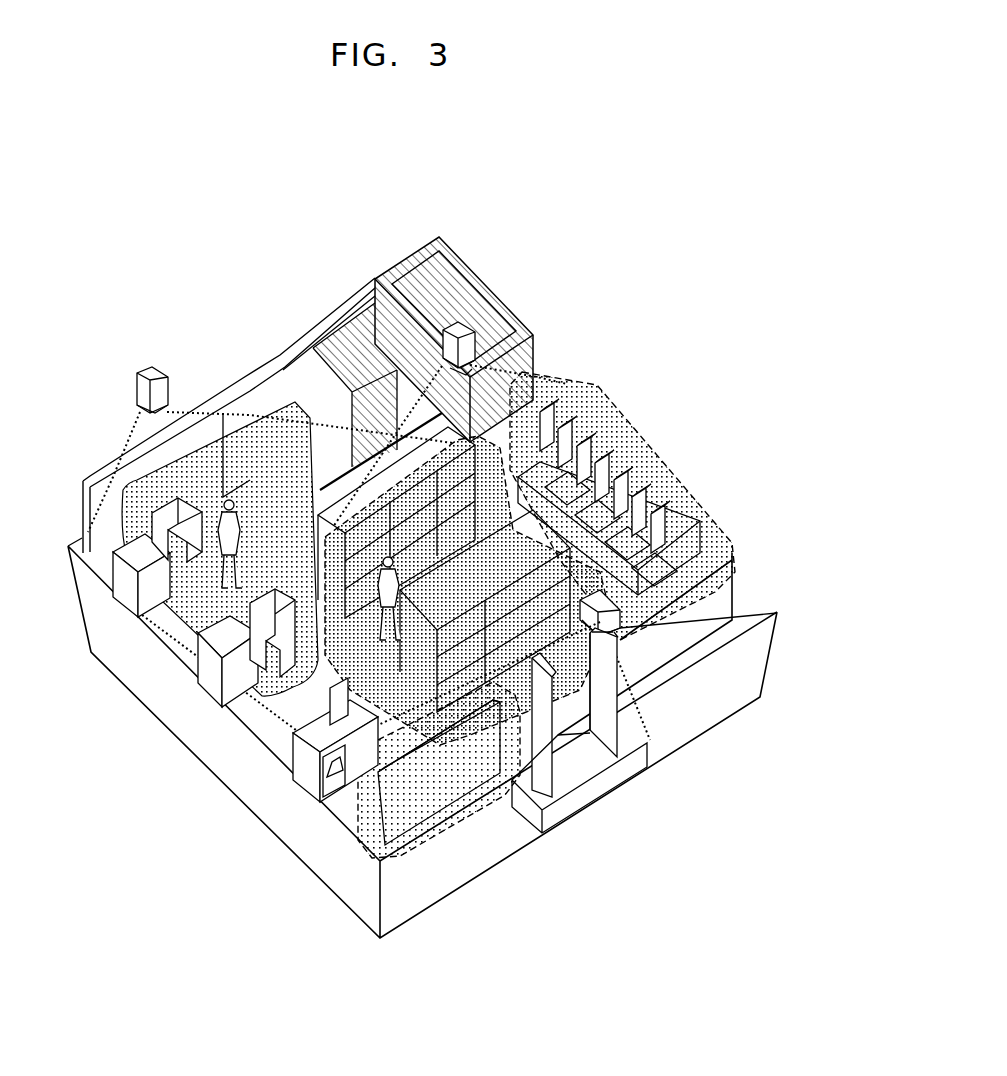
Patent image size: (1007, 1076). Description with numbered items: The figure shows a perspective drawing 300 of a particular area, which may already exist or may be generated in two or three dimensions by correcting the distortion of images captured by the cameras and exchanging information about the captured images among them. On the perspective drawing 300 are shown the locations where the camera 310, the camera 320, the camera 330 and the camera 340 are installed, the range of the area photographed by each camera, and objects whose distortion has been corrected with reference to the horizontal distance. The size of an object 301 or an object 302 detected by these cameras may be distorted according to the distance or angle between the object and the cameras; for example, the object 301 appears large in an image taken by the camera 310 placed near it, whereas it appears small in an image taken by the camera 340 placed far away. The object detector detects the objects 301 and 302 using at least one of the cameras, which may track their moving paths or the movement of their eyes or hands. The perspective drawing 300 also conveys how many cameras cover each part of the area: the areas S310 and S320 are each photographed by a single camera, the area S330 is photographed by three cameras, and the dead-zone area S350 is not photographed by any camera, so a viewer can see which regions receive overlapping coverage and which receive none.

The perspective drawing 300 is at (697, 250).
The object 301 is at (262, 698).
The object 302 is at (205, 606).
The camera 310 is at (472, 331).
The camera 320 is at (620, 623).
The camera 330 is at (320, 787).
The camera 340 is at (145, 370).
The area photographed by a single camera S310 is at (640, 450).
The area photographed by a single camera S320 is at (453, 812).
The area photographed by three cameras S330 is at (400, 482).
The dead-zone area S350 is at (488, 284).